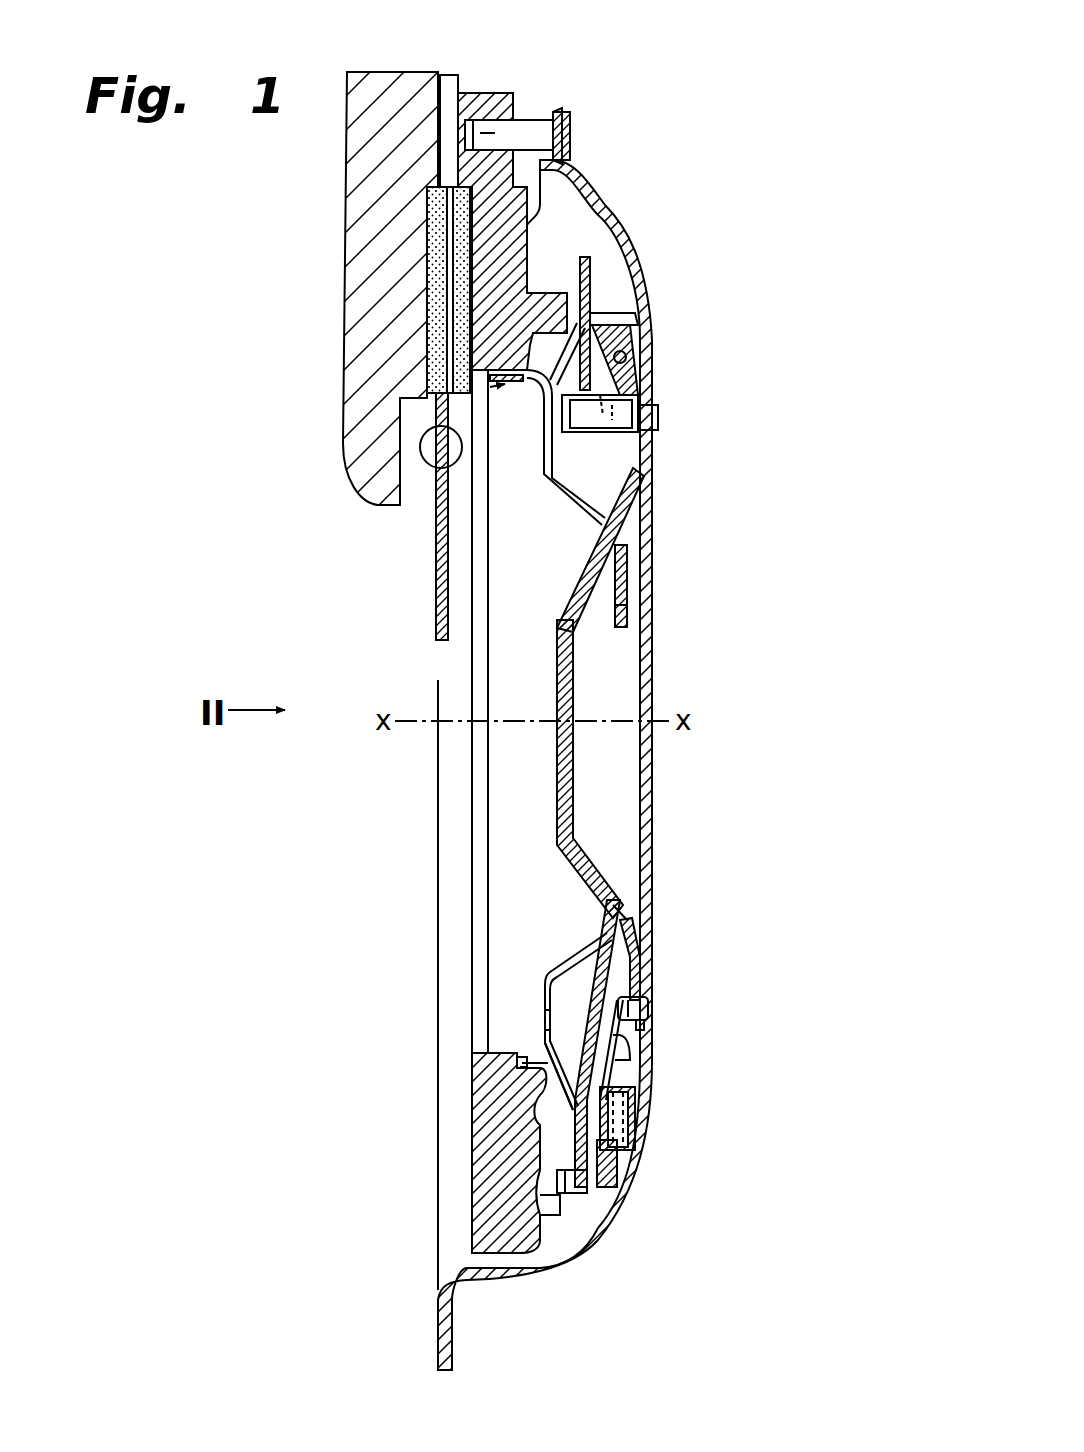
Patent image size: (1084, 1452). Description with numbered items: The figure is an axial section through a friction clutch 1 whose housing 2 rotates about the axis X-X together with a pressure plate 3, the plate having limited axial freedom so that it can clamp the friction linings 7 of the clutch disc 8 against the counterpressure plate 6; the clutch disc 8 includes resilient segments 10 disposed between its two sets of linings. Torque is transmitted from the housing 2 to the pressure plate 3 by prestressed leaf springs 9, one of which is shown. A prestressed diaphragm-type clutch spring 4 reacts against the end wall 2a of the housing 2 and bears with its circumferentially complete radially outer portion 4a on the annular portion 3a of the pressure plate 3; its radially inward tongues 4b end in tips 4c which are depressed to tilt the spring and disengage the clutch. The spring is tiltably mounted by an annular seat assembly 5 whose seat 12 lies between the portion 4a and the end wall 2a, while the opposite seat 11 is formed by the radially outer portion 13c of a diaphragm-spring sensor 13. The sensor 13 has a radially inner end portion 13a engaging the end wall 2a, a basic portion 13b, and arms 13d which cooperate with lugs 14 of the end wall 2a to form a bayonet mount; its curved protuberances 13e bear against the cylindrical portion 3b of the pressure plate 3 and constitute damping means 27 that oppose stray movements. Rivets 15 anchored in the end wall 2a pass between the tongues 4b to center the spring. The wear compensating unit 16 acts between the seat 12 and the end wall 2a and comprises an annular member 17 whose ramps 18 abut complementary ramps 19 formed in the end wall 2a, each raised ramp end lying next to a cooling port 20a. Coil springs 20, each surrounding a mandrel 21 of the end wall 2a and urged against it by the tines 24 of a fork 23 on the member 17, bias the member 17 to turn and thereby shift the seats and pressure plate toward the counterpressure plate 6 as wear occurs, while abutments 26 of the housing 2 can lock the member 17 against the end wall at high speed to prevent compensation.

The friction clutch 1 is at (623, 157).
The housing 2 is at (553, 190).
The end wall 2a is at (654, 447).
The pressure plate 3 is at (480, 1220).
The annular portion 3a is at (563, 1190).
The cylindrical portion 3b is at (513, 373).
The clutch spring 4 is at (593, 1177).
The radially outer portion 4a is at (583, 1187).
The tongues 4b is at (627, 573).
The tips 4c is at (627, 613).
The annular seat assembly 5 is at (575, 1120).
The counterpressure plate 6 is at (377, 207).
The friction linings 7 is at (458, 97).
The clutch disc 8 is at (437, 610).
The leaf springs 9 is at (513, 93).
The resilient segments 10 is at (428, 295).
The annular seat 11 is at (590, 287).
The annular seat 12 is at (630, 313).
The sensor 13 is at (540, 998).
The radially inner end portion 13a is at (623, 900).
The basic portion 13b is at (540, 1017).
The radially outer portion 13c is at (548, 1112).
The arms 13d is at (560, 957).
The protuberances 13e is at (520, 1057).
The lugs 14 is at (613, 537).
The rivets 15 is at (547, 480).
The wear compensating unit 16 is at (655, 337).
The annular member 17 is at (641, 370).
The ramps 18 is at (638, 330).
The complementary ramps 19 is at (628, 358).
The coil springs 20 is at (650, 1010).
The port 20a is at (648, 367).
The mandrel 21 is at (646, 1018).
The fork 23 is at (633, 990).
The tines 24 is at (633, 1033).
The abutments 26 is at (635, 1133).
The damping means 27 is at (497, 387).